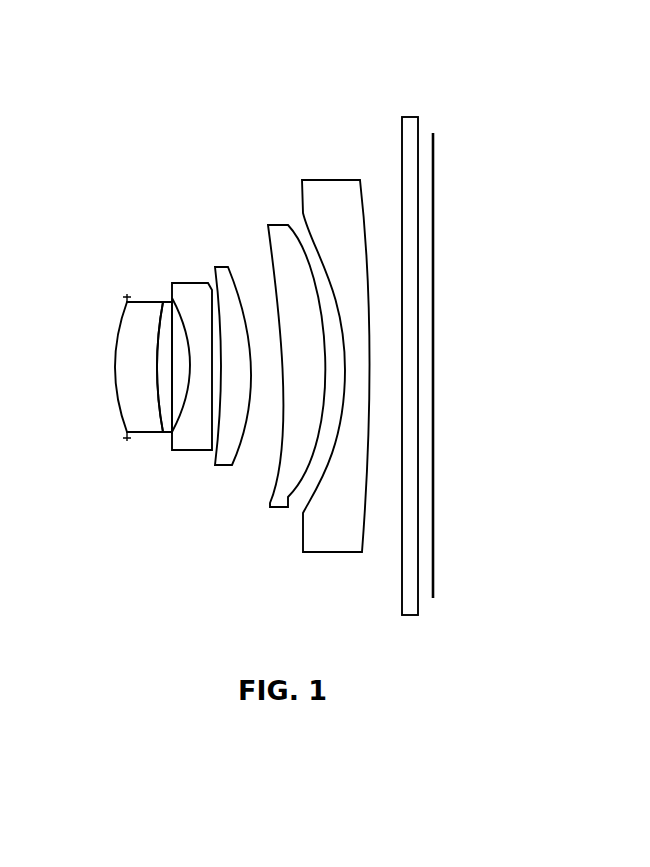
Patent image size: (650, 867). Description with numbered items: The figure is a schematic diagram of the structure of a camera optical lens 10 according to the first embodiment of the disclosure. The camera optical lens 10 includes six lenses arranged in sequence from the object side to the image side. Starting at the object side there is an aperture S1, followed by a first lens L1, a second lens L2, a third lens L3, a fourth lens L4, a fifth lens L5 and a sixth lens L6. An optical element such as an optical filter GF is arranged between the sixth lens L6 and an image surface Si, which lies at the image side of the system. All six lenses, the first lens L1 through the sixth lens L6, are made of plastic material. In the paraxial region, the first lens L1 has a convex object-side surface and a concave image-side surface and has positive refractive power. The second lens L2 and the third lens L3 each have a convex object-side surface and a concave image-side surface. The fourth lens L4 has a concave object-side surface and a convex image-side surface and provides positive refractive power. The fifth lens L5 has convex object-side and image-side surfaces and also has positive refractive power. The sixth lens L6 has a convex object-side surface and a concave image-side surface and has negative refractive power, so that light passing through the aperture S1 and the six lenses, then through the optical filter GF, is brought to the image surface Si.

The camera optical lens 10 is at (300, 28).
The aperture S1 is at (112, 357).
The first lens L1 is at (139, 353).
The second lens L2 is at (164, 347).
The third lens L3 is at (192, 354).
The fourth lens L4 is at (231, 354).
The fifth lens L5 is at (296, 354).
The sixth lens L6 is at (336, 350).
The optical filter GF is at (411, 352).
The image surface Si is at (437, 351).